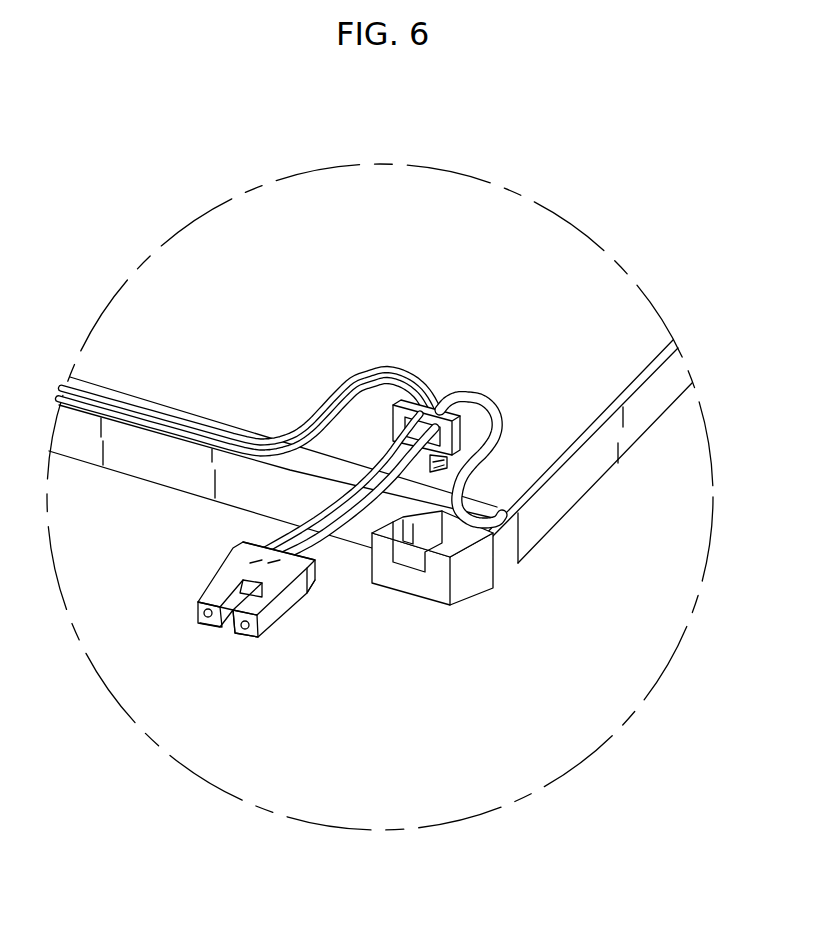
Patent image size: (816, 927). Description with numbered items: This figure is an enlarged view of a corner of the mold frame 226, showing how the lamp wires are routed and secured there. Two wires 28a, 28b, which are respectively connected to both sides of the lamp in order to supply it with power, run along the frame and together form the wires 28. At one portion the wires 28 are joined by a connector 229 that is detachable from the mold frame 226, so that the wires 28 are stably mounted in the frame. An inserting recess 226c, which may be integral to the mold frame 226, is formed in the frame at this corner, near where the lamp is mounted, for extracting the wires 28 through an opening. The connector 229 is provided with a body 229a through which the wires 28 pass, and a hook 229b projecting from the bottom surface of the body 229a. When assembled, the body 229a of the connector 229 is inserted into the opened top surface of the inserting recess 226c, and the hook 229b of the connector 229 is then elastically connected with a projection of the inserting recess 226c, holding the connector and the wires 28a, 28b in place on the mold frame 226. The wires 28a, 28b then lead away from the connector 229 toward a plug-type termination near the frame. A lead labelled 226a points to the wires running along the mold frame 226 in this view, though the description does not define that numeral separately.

The mold frame 226 is at (163, 473).
The cable 226a is at (282, 452).
The inserting recess 226c is at (452, 552).
The connector 229 is at (420, 400).
The body 229a is at (453, 444).
The hook 229b is at (442, 460).
The wires 28 is at (386, 655).
The wire 28a is at (327, 518).
The wire 28b is at (353, 530).